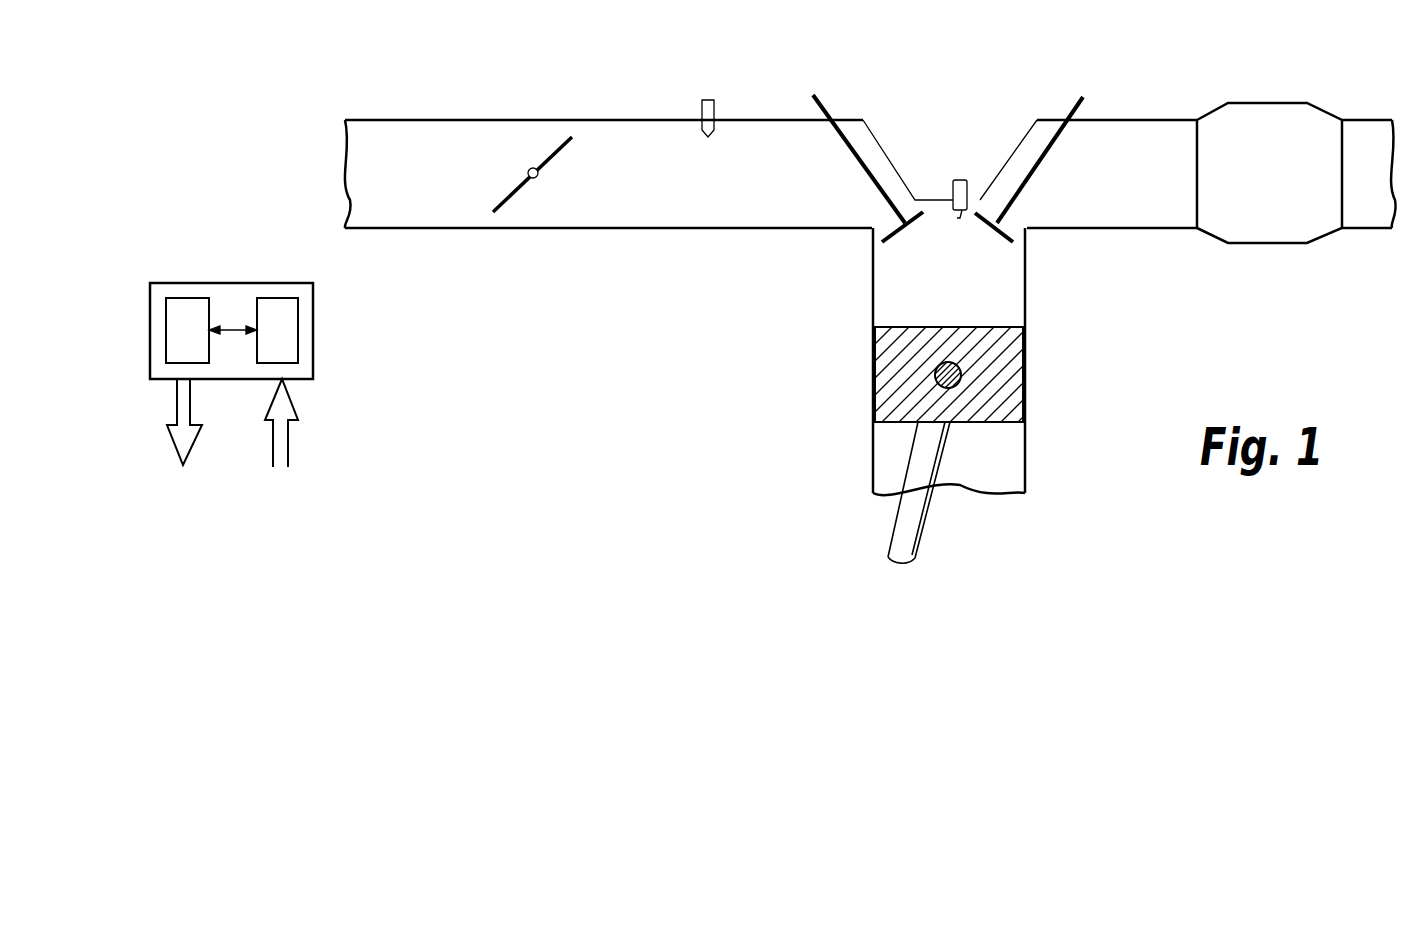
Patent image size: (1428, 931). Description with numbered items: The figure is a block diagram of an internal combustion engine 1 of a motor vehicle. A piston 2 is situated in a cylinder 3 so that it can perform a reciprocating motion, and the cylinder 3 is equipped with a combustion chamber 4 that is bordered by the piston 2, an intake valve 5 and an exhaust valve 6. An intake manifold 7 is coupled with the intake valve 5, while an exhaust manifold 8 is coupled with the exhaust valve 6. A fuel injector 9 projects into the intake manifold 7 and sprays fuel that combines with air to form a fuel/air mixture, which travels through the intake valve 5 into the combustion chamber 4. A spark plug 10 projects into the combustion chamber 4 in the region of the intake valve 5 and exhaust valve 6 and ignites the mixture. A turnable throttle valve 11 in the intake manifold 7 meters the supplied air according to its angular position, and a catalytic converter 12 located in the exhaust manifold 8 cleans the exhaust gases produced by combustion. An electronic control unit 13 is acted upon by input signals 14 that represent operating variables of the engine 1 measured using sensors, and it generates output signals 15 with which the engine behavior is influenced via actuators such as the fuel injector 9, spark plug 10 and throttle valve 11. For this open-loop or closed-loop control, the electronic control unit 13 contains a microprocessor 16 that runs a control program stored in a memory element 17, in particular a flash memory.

The internal combustion engine 1 is at (745, 354).
The piston 2 is at (1008, 382).
The cylinder 3 is at (1027, 290).
The combustion chamber 4 is at (903, 295).
The intake valve 5 is at (848, 127).
The exhaust valve 6 is at (1038, 128).
The intake manifold 7 is at (683, 218).
The exhaust manifold 8 is at (1133, 217).
The fuel injector 9 is at (705, 100).
The spark plug 10 is at (968, 185).
The throttle valve 11 is at (510, 190).
The catalytic converter 12 is at (1252, 190).
The electronic control unit 13 is at (238, 298).
The input signals 14 is at (282, 447).
The output signals 15 is at (180, 403).
The microprocessor 16 is at (177, 333).
The memory element 17 is at (290, 333).